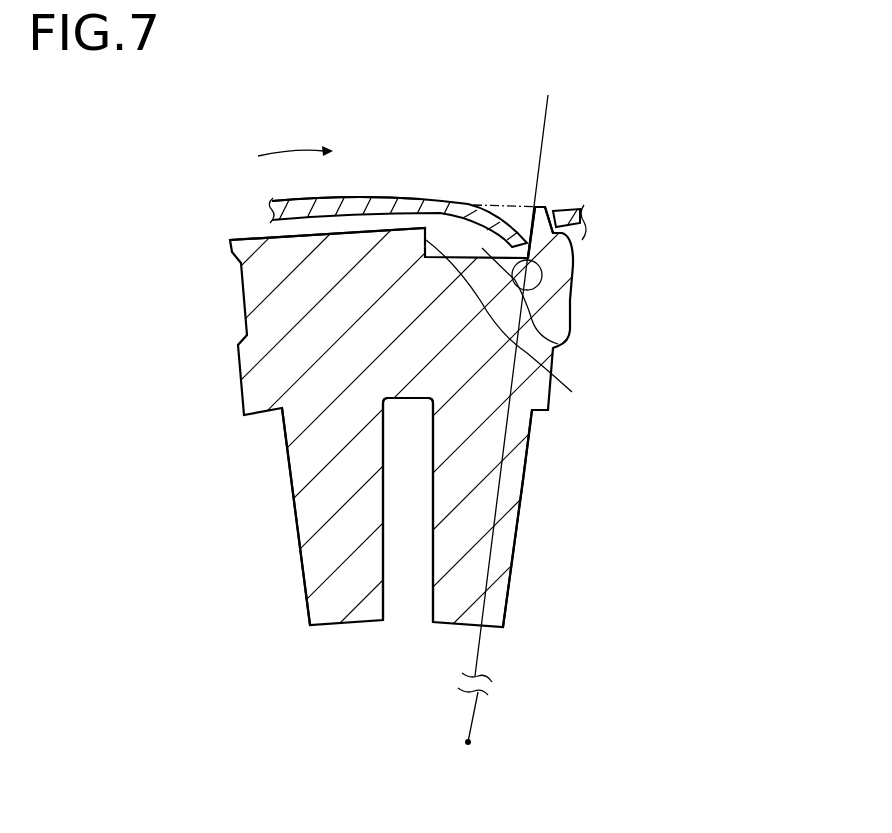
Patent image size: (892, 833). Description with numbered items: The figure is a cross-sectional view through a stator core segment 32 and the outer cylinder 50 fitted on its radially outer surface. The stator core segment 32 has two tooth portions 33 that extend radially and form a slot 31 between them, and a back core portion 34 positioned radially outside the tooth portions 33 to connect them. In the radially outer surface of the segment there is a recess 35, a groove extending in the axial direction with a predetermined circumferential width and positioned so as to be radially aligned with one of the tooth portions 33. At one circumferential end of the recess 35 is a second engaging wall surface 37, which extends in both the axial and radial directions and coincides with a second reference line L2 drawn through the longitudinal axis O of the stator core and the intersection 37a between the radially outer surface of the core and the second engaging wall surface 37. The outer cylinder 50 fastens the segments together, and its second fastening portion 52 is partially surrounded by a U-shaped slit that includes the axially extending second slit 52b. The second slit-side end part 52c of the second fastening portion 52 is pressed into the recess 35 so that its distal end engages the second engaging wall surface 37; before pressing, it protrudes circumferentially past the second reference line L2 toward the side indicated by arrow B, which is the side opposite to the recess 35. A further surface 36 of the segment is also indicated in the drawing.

The slot 31 is at (398, 567).
The stator core segment 32 is at (233, 397).
The tooth portion 33 is at (328, 564).
The back core portion 34 is at (288, 301).
The recess 35 is at (558, 344).
The arc surface 36 is at (518, 325).
The second engaging wall surface 37 is at (542, 285).
The intersection 37a is at (526, 206).
The outer cylinder 50 is at (292, 195).
The second fastening portion 52 is at (460, 202).
The second slit 52b is at (548, 205).
The second slit-side end part 52c is at (488, 200).
The second reference line L2 is at (511, 402).
The longitudinal axis O is at (465, 760).
The arrow B is at (295, 135).